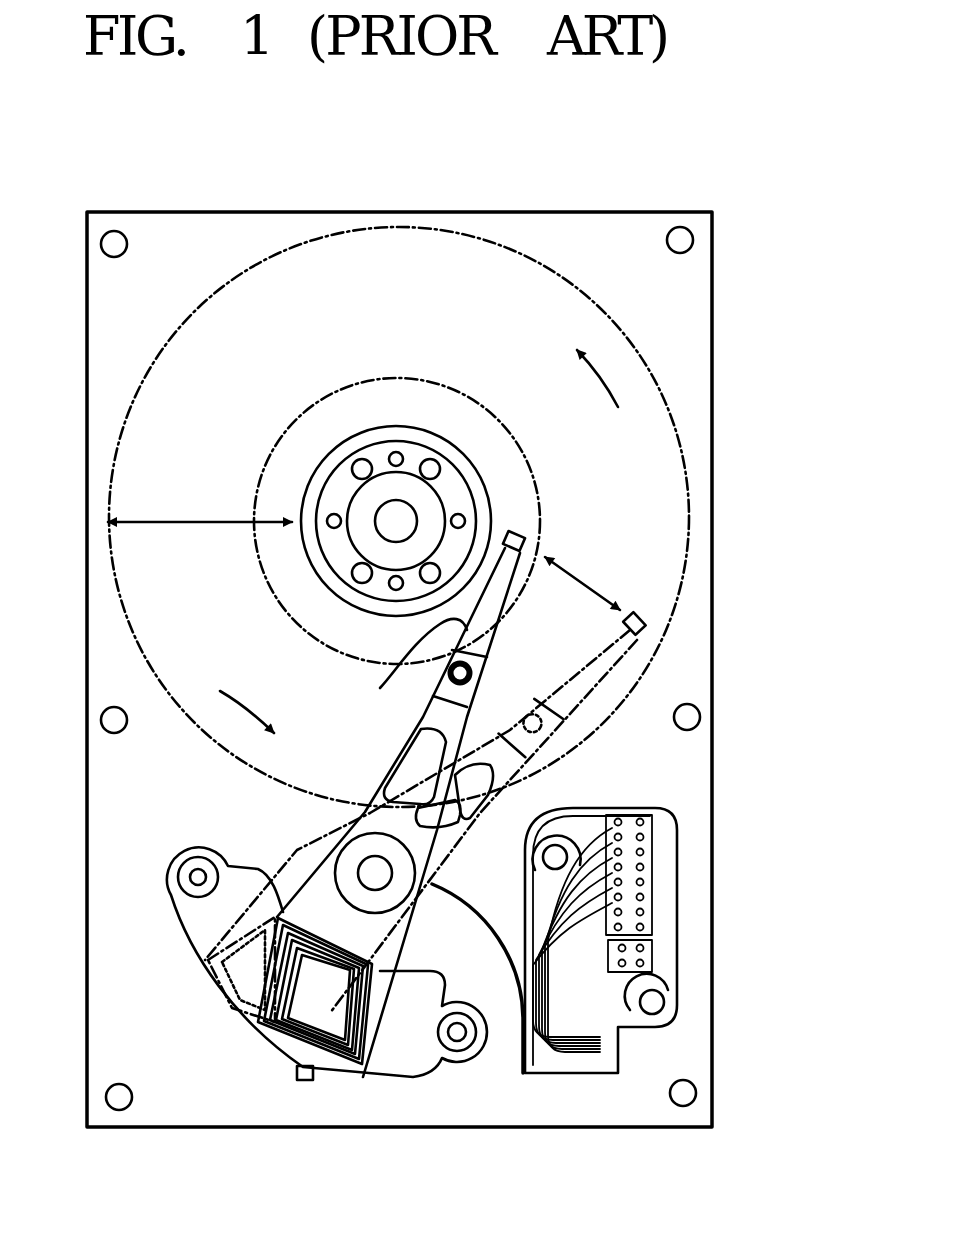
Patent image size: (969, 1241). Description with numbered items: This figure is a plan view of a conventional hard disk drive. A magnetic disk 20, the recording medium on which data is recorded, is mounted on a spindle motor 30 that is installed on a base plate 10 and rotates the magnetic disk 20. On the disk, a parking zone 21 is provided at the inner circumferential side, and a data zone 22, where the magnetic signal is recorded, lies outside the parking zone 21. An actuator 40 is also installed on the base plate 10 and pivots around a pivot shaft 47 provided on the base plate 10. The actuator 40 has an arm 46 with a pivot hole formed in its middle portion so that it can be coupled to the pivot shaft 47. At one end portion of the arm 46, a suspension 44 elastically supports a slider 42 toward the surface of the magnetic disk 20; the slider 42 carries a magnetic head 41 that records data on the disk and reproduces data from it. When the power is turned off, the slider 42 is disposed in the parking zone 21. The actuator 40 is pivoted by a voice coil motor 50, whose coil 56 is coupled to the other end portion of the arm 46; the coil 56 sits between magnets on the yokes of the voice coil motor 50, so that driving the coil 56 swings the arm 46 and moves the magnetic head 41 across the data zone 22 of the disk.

The base plate 10 is at (693, 319).
The magnetic disk 20 is at (668, 570).
The parking zone 21 is at (283, 515).
The data zone 22 is at (183, 520).
The spindle motor 30 is at (451, 487).
The actuator 40 is at (424, 827).
The magnetic head 41 is at (530, 535).
The slider 42 is at (540, 548).
The suspension 44 is at (381, 687).
The arm 46 is at (390, 772).
The pivot shaft 47 is at (380, 873).
The voice coil motor 50 is at (432, 1080).
The coil 56 is at (352, 1068).